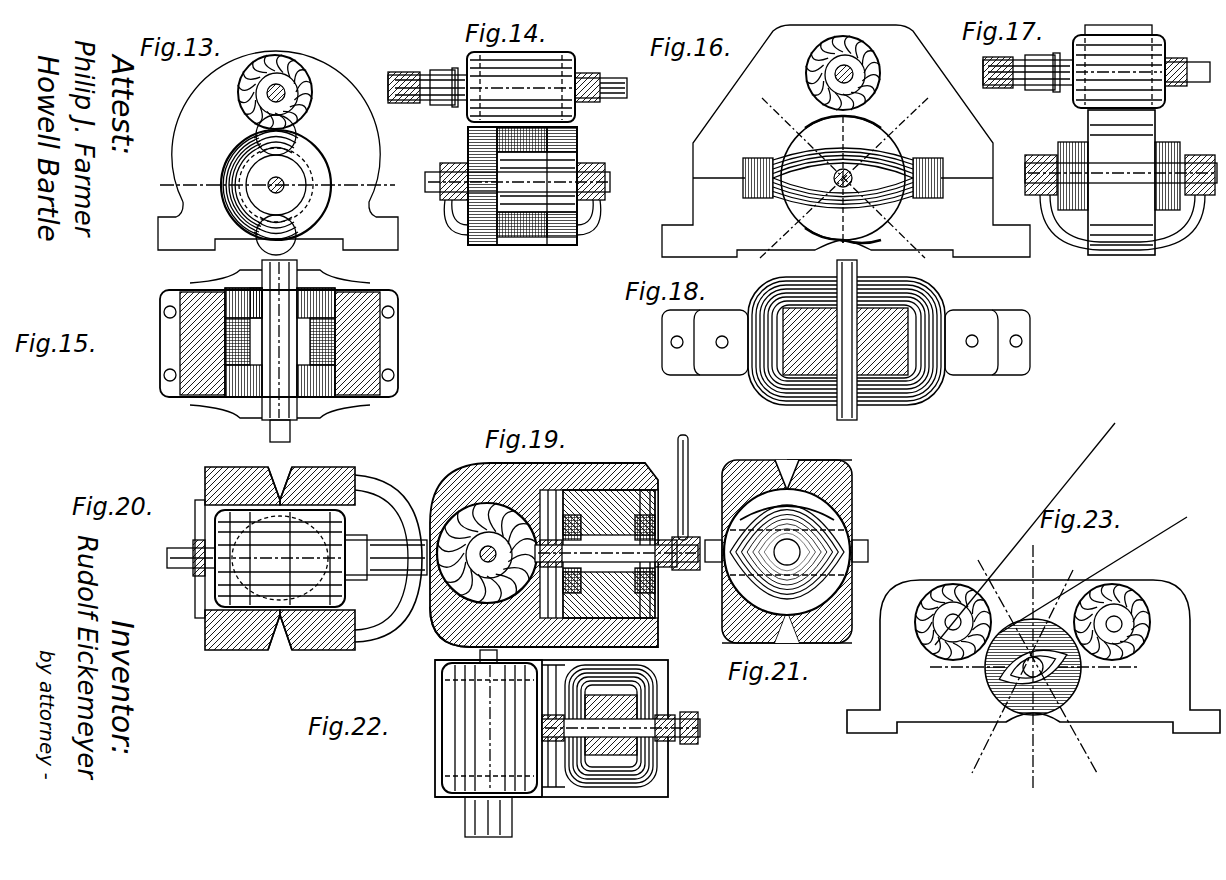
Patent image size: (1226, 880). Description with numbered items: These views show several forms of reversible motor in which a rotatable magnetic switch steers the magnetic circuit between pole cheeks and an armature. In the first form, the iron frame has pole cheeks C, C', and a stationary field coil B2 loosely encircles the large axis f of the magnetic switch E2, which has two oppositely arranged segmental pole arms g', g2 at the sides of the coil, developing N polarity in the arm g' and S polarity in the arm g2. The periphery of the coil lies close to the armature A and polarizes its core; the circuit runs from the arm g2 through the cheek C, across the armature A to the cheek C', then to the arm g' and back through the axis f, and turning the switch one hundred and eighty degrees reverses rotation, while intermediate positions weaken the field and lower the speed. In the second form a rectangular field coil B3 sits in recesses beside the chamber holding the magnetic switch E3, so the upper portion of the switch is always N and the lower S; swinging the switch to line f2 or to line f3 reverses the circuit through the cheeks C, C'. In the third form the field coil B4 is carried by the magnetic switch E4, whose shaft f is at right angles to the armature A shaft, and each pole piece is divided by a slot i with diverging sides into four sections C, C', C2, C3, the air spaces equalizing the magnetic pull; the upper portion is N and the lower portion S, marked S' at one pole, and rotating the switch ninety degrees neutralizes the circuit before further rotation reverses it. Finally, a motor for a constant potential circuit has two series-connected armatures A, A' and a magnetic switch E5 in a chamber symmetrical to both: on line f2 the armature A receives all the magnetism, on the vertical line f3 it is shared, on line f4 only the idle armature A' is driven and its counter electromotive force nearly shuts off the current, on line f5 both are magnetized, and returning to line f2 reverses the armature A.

In FIG. 13, the armature A is at (275, 80).
In FIG. 14, the armature A is at (507, 87).
In FIG. 16, the armature A is at (827, 73).
In FIG. 17, the armature A is at (1096, 66).
In FIG. 19, the armature A is at (486, 564).
In FIG. 20, the armature A is at (297, 558).
In FIG. 22, the armature A is at (489, 743).
In FIG. 23, the armature A is at (953, 622).
In FIG. 23, the second armature A' is at (1121, 622).
In FIG. 13, the pole cheek C is at (217, 150).
In FIG. 15, the pole cheek C is at (279, 344).
In FIG. 16, the pole cheek C is at (752, 141).
In FIG. 18, the pole cheek C is at (705, 342).
In FIG. 19, the pole cheek C is at (544, 555).
In FIG. 20, the pole cheek C is at (236, 531).
In FIG. 21, the pole cheek C is at (819, 449).
In FIG. 13, the pole cheek C' is at (337, 150).
In FIG. 15, the pole cheek C' is at (345, 344).
In FIG. 16, the pole cheek C' is at (936, 141).
In FIG. 18, the pole cheek C' is at (987, 342).
In FIG. 20, the pole cheek C' is at (351, 542).
In FIG. 21, the pole cheek C' is at (787, 540).
In FIG. 19, the pole cheek section C2 is at (462, 627).
In FIG. 20, the pole cheek section C2 is at (242, 640).
In FIG. 21, the pole cheek section C2 is at (819, 653).
In FIG. 22, the pole cheek section C2 is at (440, 672).
In FIG. 20, the pole cheek section C3 is at (317, 640).
In FIG. 21, the pole cheek section C3 is at (754, 654).
In FIG. 22, the pole cheek section C3 is at (440, 778).
In FIG. 13, the magnetic switch E2 is at (277, 185).
In FIG. 14, the magnetic switch E2 is at (468, 133).
In FIG. 16, the magnetic switch E3 is at (843, 178).
In FIG. 17, the magnetic switch E3 is at (1121, 182).
In FIG. 18, the magnetic switch E3 is at (845, 340).
In FIG. 19, the magnetic switch E4 is at (599, 554).
In FIG. 21, the magnetic switch E4 is at (787, 552).
In FIG. 22, the magnetic switch E4 is at (611, 725).
In FIG. 23, the magnetic switch E5 is at (1075, 678).
In FIG. 13, the field coil B2 is at (272, 232).
In FIG. 14, the field coil B2 is at (533, 237).
In FIG. 15, the field coil B2 is at (322, 320).
In FIG. 16, the field coil B3 is at (912, 155).
In FIG. 17, the field coil B3 is at (1172, 134).
In FIG. 18, the field coil B3 is at (868, 280).
In FIG. 19, the field coil B4 is at (658, 575).
In FIG. 21, the field coil B4 is at (787, 552).
In FIG. 22, the field coil B4 is at (599, 726).
In FIG. 13, the north polarity N is at (300, 168).
In FIG. 14, the north polarity N is at (482, 186).
In FIG. 15, the north polarity N is at (253, 381).
In FIG. 16, the north polarity N is at (836, 165).
In FIG. 19, the north polarity N is at (609, 517).
In FIG. 21, the north polarity N is at (787, 505).
In FIG. 14, the south polarity S is at (537, 182).
In FIG. 15, the south polarity S is at (266, 303).
In FIG. 16, the south polarity S is at (843, 167).
In FIG. 19, the south pole piece S' is at (609, 590).
In FIG. 14, the axis of magnetic switch f is at (517, 199).
In FIG. 15, the axis of magnetic switch f is at (279, 351).
In FIG. 19, the axis of magnetic switch f is at (617, 553).
In FIG. 21, the axis of magnetic switch f is at (786, 552).
In FIG. 22, the axis of magnetic switch f is at (699, 728).
In FIG. 16, the switch position line f2 is at (852, 178).
In FIG. 23, the switch position line f2 is at (1079, 645).
In FIG. 16, the switch position line f3 is at (840, 178).
In FIG. 23, the switch position line f3 is at (1041, 667).
In FIG. 23, the switch position line f4 is at (1025, 598).
In FIG. 23, the switch position line f5 is at (1033, 656).
In FIG. 13, the pole arm g' is at (276, 185).
In FIG. 14, the pole arm g' is at (525, 216).
In FIG. 15, the pole arm g' is at (316, 342).
In FIG. 14, the pole arm g2 is at (578, 135).
In FIG. 15, the pole arm g2 is at (240, 300).
In FIG. 20, the slot i is at (280, 564).
In FIG. 21, the slot i is at (787, 554).